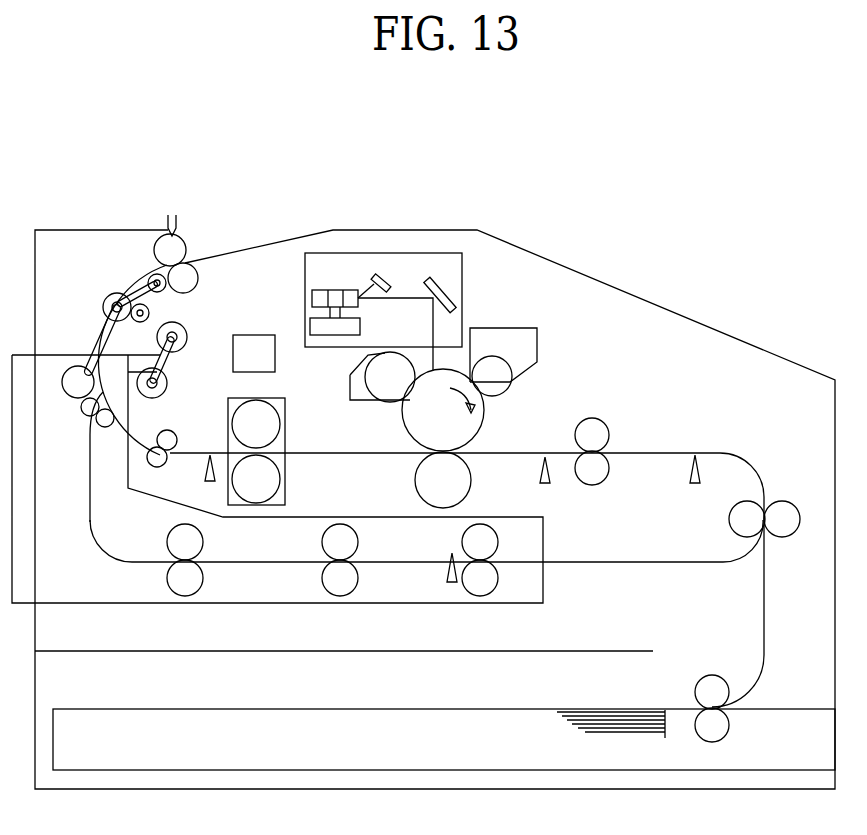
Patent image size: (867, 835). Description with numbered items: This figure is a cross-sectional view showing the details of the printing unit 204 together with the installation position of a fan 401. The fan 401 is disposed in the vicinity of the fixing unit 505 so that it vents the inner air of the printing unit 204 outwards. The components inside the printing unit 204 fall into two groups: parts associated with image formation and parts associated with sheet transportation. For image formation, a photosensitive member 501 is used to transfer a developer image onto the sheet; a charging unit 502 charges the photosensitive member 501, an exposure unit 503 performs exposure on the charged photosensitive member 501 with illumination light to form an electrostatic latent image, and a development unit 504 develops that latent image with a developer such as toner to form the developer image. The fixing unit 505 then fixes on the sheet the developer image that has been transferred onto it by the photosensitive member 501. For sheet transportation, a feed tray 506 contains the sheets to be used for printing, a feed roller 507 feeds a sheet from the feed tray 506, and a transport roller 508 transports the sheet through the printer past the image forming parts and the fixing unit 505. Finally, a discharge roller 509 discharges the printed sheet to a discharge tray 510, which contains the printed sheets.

The printing unit 204 is at (583, 275).
The fan 401 is at (233, 348).
The photosensitive member 501 is at (485, 405).
The charging unit 502 is at (350, 382).
The exposure unit 503 is at (357, 253).
The development unit 504 is at (537, 336).
The fixing unit 505 is at (285, 434).
The feed tray 506 is at (553, 725).
The feed roller 507 is at (731, 730).
The transport roller 508 is at (200, 423).
The discharge roller 509 is at (197, 284).
The discharge tray 510 is at (237, 252).